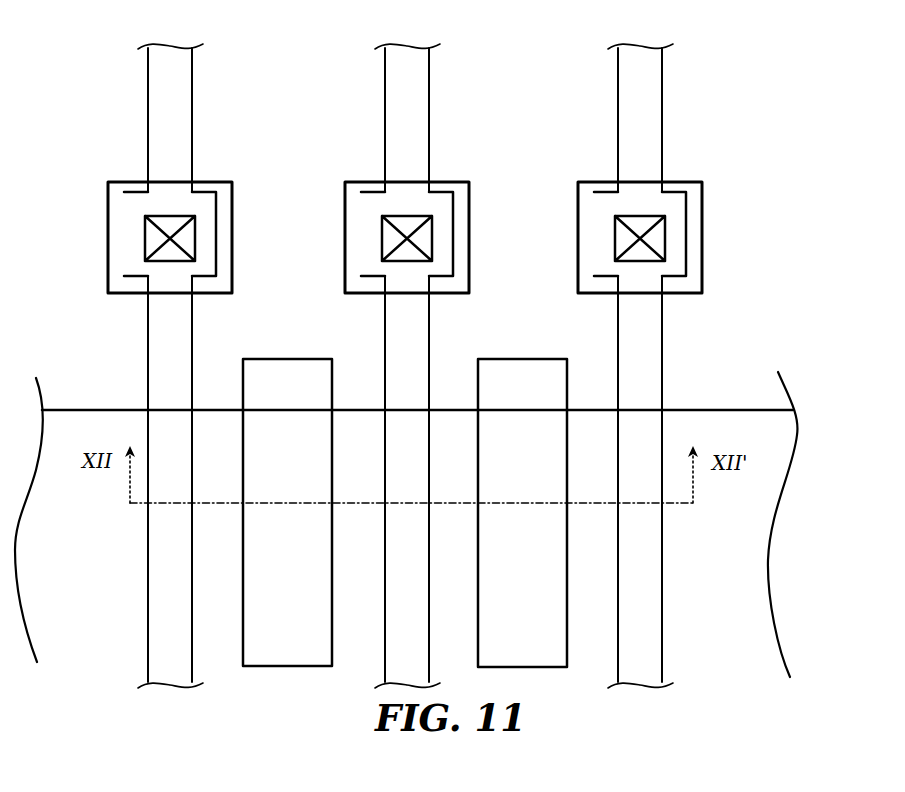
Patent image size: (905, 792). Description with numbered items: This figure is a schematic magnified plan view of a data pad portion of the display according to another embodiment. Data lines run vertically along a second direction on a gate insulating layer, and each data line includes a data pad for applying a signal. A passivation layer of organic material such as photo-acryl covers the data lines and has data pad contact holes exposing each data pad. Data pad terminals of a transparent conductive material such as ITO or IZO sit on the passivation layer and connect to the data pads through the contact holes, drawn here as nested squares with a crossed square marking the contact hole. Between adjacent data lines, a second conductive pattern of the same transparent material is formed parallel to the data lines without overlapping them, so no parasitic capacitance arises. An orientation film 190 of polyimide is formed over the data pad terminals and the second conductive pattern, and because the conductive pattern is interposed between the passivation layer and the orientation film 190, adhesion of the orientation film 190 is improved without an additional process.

The orientation film 190 is at (778, 450).